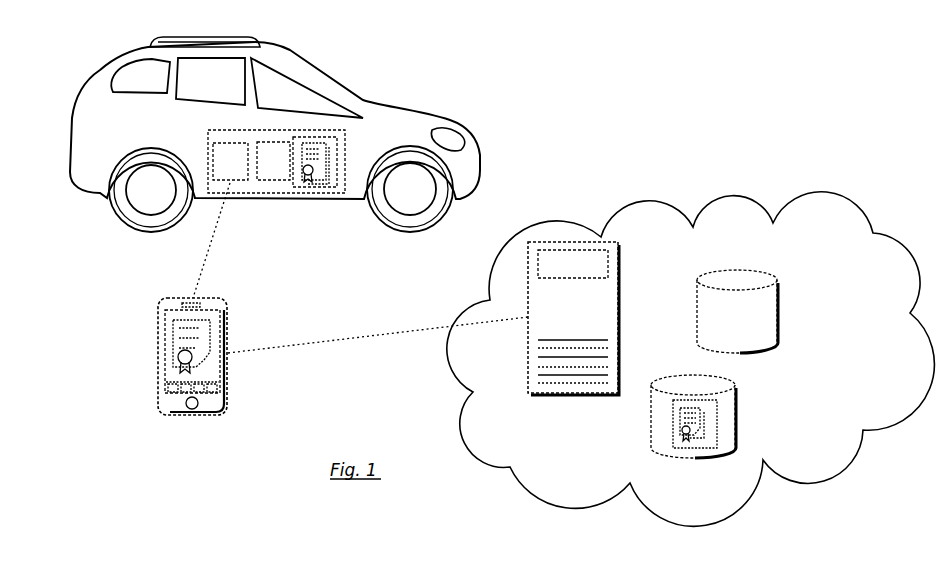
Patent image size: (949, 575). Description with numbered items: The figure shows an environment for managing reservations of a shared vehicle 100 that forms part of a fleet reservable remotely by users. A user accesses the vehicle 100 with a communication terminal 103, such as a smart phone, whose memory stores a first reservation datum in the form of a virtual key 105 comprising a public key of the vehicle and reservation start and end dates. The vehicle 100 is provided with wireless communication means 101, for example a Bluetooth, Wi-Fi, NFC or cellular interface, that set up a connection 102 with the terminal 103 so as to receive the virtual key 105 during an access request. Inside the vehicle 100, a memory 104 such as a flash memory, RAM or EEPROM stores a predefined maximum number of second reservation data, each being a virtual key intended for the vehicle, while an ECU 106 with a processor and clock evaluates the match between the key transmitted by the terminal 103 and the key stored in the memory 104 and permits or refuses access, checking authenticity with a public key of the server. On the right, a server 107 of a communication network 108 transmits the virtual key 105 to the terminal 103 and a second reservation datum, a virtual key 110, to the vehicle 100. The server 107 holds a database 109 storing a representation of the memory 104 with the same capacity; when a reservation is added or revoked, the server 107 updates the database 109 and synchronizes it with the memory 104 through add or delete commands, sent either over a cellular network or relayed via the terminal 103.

The shared vehicle 100 is at (70, 110).
The wireless communication means 101 is at (213, 157).
The connection 102 is at (190, 283).
The communication terminal 103 is at (158, 345).
The memory 104 is at (328, 182).
The virtual key 105 is at (222, 331).
The ECU 106 is at (266, 180).
The server 107 is at (528, 382).
The communication network 108 is at (733, 456).
The database 109 is at (780, 347).
The virtual key 110 is at (318, 157).